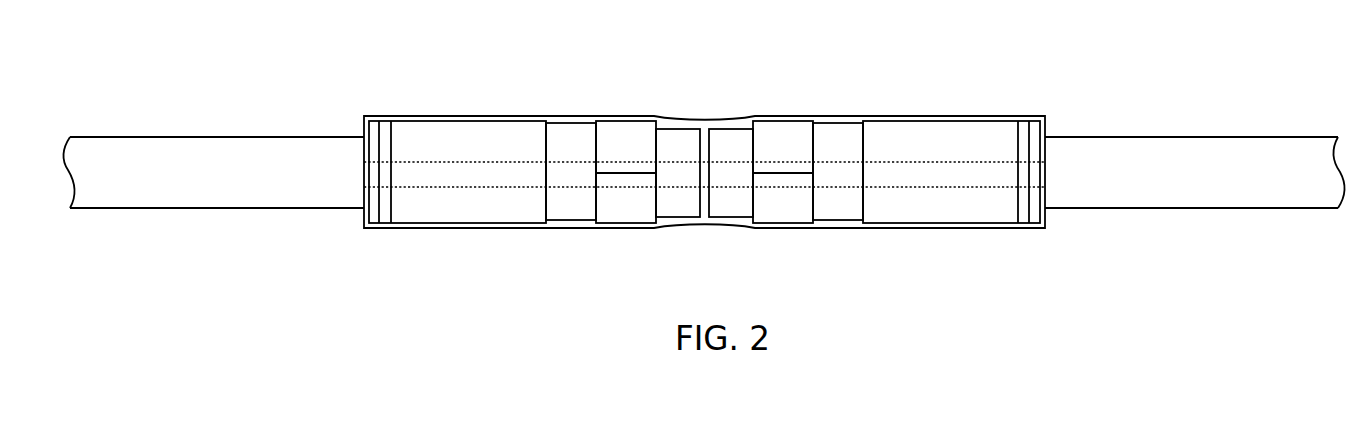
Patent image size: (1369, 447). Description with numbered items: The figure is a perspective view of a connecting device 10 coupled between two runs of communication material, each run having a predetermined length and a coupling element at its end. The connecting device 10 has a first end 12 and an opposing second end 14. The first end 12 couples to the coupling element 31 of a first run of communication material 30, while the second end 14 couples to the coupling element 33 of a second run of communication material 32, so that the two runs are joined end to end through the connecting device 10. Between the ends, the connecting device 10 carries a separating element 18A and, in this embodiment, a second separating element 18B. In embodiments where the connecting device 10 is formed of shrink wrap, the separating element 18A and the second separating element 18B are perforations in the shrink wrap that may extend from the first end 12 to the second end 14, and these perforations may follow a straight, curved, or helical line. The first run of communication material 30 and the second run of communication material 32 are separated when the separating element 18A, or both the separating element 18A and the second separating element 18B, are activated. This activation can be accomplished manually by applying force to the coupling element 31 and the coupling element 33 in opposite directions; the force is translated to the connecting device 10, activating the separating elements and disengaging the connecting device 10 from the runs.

The connecting device 10 is at (718, 97).
The first end 12 is at (513, 185).
The second end 14 is at (892, 184).
The separating element 18A is at (906, 163).
The second separating element 18B is at (673, 183).
The first run of communication material 30 is at (167, 157).
The coupling element 31 is at (522, 134).
The second run of communication material 32 is at (1214, 162).
The coupling element 33 is at (985, 153).